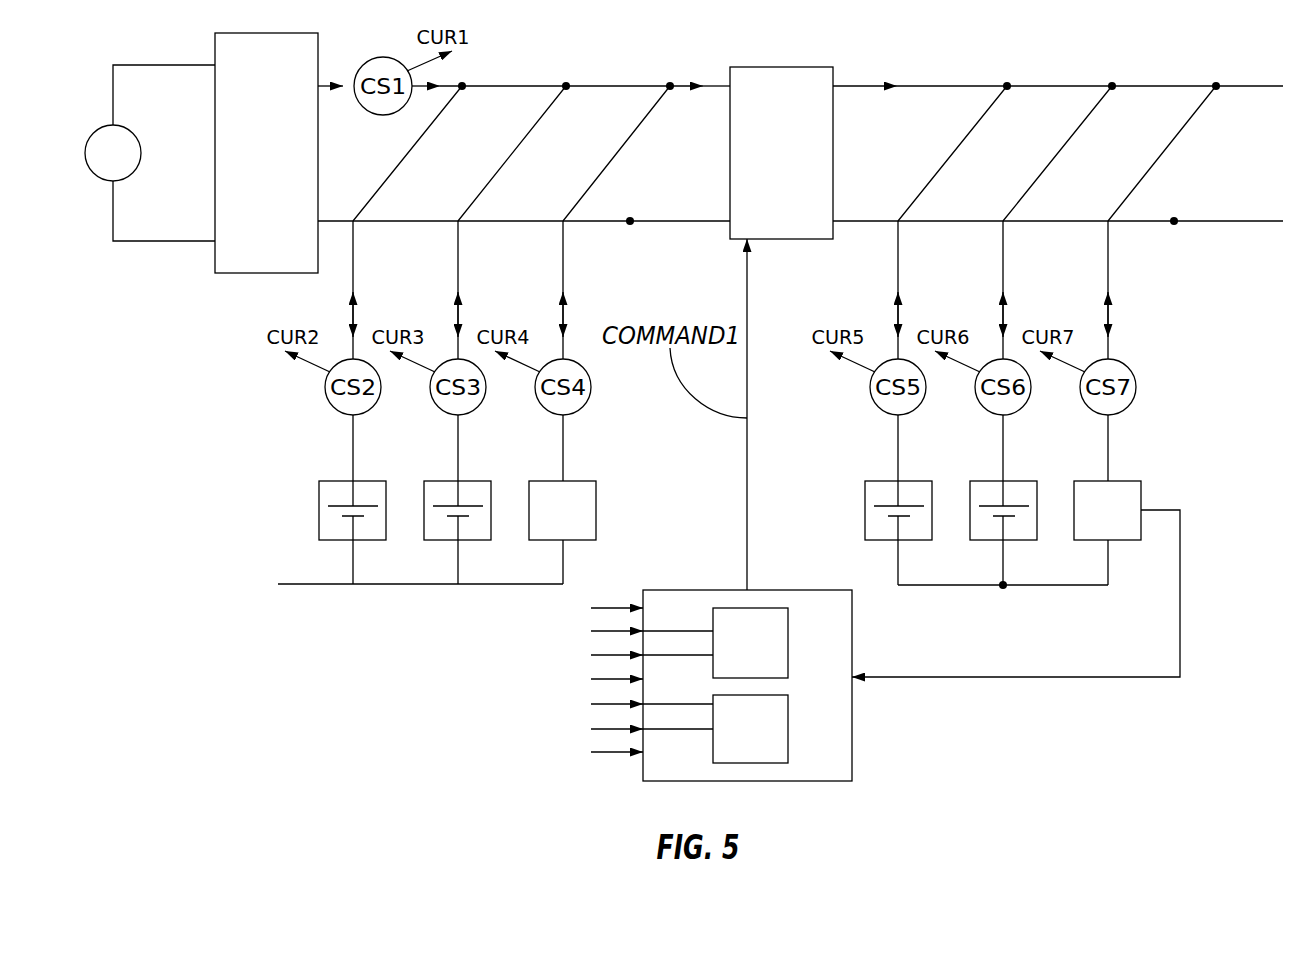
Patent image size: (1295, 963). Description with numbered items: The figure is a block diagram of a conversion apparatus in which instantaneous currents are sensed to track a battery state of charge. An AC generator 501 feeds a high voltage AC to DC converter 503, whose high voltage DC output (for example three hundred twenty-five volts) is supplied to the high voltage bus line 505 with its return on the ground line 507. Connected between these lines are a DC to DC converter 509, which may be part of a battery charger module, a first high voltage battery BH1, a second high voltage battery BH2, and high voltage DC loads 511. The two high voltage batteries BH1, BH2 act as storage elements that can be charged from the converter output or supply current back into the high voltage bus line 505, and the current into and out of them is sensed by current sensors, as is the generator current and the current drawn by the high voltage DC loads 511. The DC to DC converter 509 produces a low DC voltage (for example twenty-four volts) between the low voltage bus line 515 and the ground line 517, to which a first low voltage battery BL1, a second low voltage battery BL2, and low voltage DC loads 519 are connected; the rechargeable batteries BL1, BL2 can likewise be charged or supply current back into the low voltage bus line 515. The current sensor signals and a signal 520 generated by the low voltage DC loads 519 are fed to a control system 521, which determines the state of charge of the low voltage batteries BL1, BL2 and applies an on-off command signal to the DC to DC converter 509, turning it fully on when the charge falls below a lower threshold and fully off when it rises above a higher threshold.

The AC generator 501 is at (93, 175).
The high voltage AC to DC converter 503 is at (288, 167).
The high voltage bus line 505 is at (608, 83).
The ground line 507 is at (528, 223).
The DC to DC converter 509 is at (803, 167).
The high voltage DC loads 511 is at (541, 481).
The low voltage bus line 515 is at (1058, 83).
The ground line 517 is at (1147, 223).
The low voltage DC loads 519 is at (1090, 481).
The signal 520 is at (935, 679).
The control system 521 is at (835, 751).
The first high voltage battery BH1 is at (335, 481).
The second high voltage battery BH2 is at (440, 481).
The first low voltage battery BL1 is at (881, 481).
The second low voltage battery BL2 is at (986, 481).